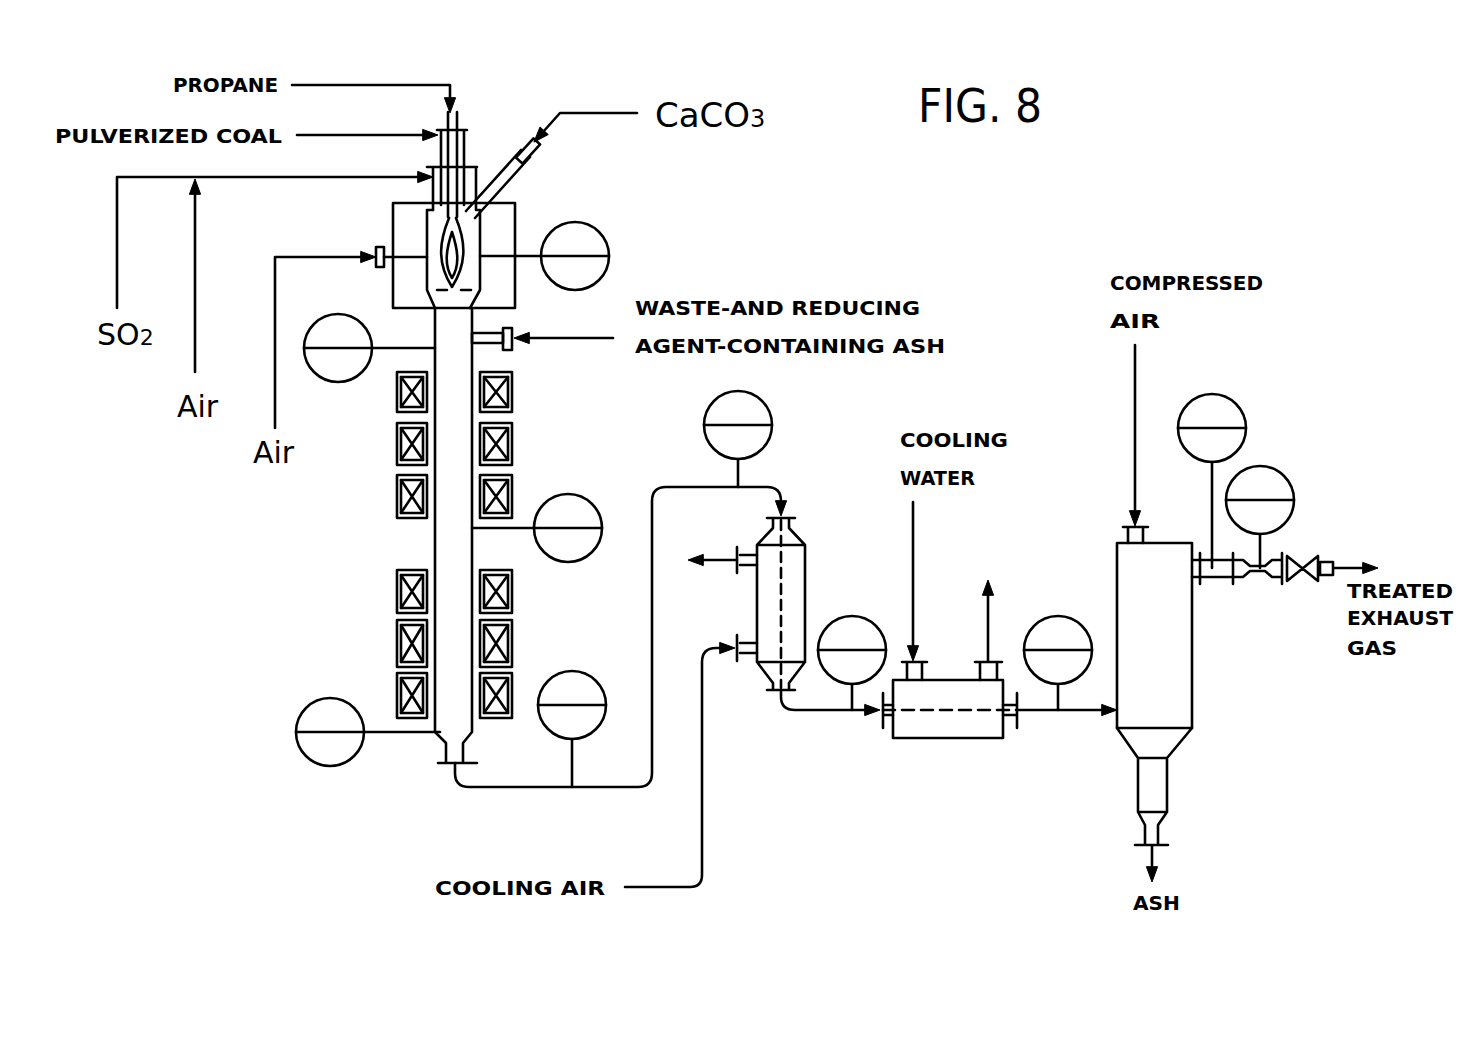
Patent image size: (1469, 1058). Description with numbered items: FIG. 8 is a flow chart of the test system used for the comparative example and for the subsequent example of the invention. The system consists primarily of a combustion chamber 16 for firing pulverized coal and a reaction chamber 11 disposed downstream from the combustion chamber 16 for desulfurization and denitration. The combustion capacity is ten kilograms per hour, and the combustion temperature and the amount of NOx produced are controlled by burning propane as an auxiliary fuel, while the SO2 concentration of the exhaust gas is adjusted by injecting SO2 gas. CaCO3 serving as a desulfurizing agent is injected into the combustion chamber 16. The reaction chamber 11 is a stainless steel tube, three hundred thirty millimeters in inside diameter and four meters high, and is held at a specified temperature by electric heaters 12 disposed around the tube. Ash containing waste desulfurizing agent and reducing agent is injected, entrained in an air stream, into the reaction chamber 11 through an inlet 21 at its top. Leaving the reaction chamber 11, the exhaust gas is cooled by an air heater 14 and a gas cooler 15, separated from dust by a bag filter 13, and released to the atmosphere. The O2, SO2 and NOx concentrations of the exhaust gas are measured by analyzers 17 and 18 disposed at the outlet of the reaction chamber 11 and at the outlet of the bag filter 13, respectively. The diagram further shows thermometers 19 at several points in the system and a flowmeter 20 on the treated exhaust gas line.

The reaction chamber 11 is at (435, 530).
The electric heaters 12 is at (397, 400).
The bag filter 13 is at (1192, 652).
The air heater 14 is at (836, 523).
The gas cooler 15 is at (950, 740).
The combustion chamber 16 is at (512, 223).
The analyzer 17 is at (576, 672).
The analyzer 18 is at (1235, 401).
The thermometers 19 is at (605, 233).
The flowmeter 20 is at (1283, 473).
The inlet 21 is at (499, 348).